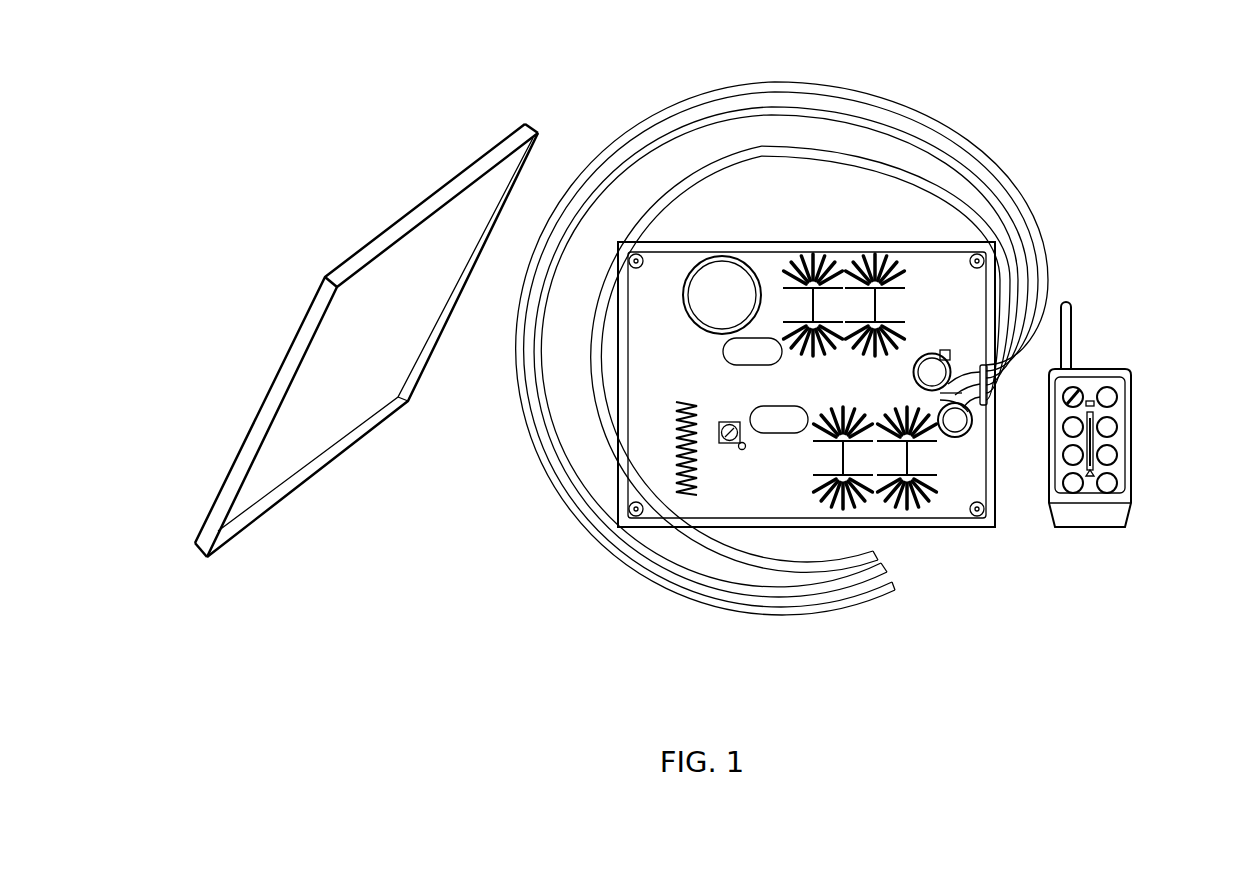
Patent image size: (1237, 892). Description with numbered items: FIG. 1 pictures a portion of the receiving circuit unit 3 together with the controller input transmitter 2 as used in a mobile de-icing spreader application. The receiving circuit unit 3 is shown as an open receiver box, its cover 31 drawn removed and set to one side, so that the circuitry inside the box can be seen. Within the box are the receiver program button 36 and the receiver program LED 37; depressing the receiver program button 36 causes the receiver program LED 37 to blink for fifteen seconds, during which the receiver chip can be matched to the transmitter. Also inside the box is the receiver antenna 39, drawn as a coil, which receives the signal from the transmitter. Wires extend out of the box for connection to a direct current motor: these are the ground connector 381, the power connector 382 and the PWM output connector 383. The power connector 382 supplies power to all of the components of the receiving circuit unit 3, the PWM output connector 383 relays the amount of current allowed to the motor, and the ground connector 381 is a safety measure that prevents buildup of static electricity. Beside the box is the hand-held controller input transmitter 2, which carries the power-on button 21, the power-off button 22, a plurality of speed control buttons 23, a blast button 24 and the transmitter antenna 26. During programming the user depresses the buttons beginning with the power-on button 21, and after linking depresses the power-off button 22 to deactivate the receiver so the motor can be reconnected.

The controller input transmitter 2 is at (1122, 362).
The receiving circuit unit 3 is at (770, 297).
The power-on button 21 is at (1075, 497).
The power-off button 22 is at (1115, 400).
The speed control buttons 23 is at (1117, 427).
The blast button 24 is at (1068, 395).
The transmitter antenna 26 is at (1066, 355).
The cover 31 is at (383, 282).
The receiver program button 36 is at (722, 447).
The receiver program LED 37 is at (744, 450).
The receiver antenna 39 is at (672, 427).
The ground connector 381 is at (660, 118).
The power connector 382 is at (787, 112).
The PWM output connector 383 is at (928, 172).